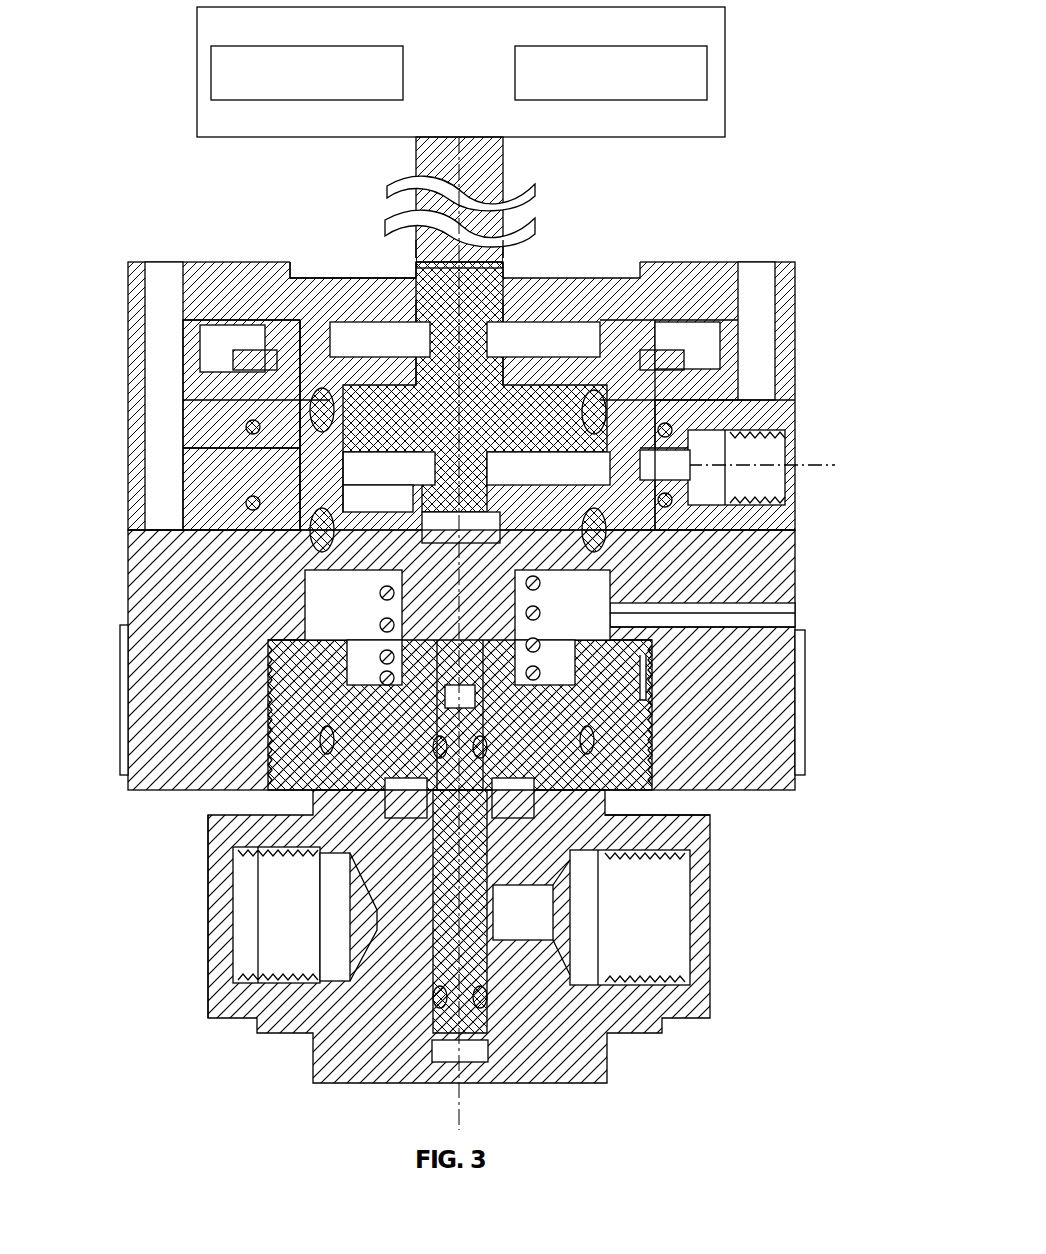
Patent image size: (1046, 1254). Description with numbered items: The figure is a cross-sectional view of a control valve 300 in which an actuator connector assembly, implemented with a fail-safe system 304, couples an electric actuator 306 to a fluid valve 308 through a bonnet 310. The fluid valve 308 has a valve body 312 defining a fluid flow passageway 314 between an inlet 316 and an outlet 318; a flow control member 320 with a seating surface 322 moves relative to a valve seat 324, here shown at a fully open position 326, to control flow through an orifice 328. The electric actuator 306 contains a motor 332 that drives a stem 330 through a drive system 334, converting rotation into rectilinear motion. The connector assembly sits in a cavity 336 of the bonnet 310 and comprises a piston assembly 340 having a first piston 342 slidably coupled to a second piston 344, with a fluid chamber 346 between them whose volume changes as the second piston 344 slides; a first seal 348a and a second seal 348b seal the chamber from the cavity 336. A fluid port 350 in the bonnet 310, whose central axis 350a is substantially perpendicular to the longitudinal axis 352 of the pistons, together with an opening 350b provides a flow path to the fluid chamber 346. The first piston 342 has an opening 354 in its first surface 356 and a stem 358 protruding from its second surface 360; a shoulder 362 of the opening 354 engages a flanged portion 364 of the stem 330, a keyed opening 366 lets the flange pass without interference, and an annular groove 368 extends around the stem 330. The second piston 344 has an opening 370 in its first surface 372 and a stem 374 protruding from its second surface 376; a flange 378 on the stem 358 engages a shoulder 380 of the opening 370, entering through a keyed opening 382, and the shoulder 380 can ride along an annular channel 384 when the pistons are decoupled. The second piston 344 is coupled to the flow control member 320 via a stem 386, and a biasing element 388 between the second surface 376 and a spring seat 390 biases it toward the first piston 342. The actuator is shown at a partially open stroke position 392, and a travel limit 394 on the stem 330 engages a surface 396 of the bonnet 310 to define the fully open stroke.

The control valve 300 is at (814, 28).
The fail-safe system 304 is at (300, 455).
The electric actuator 306 is at (197, 42).
The fluid valve 308 is at (185, 965).
The bonnet 310 is at (128, 540).
The valve body 312 is at (318, 1060).
The fluid flow passageway 314 is at (548, 923).
The inlet 316 is at (710, 920).
The outlet 318 is at (208, 925).
The flow control member 320 is at (560, 890).
The seating surface 322 is at (390, 855).
The valve seat 324 is at (390, 830).
The fully open position 326 is at (385, 900).
The orifice 328 is at (500, 830).
The stem 330 is at (513, 268).
The motor 332 is at (211, 70).
The drive system 334 is at (707, 75).
The cavity 336 is at (360, 621).
The piston assembly 340 is at (345, 335).
The first piston 342 is at (655, 395).
The second piston 344 is at (615, 660).
The fluid chamber 346 is at (604, 480).
The first seal 348a is at (335, 405).
The second seal 348b is at (330, 585).
The fluid port 350 is at (795, 495).
The central axis 350a is at (770, 462).
The opening 350b is at (640, 445).
The longitudinal axis 352 is at (440, 200).
The opening 354 is at (640, 370).
The first surface 356 is at (582, 335).
The stem 358 is at (435, 485).
The second surface 360 is at (370, 385).
The shoulder 362 is at (495, 372).
The flanged portion 364 is at (420, 375).
The keyed opening 366 is at (345, 345).
The annular groove 368 is at (440, 330).
The opening 370 is at (620, 640).
The first surface 372 is at (330, 465).
The stem 374 is at (300, 690).
The second surface 376 is at (560, 590).
The flange 378 is at (430, 545).
The shoulder 380 is at (610, 605).
The keyed opening 382 is at (320, 545).
The annular channel 384 is at (605, 540).
The stem 386 is at (300, 755).
The biasing element 388 is at (320, 620).
The spring seat 390 is at (640, 735).
The partially open stroke position 392 is at (600, 335).
The travel limit 394 is at (527, 268).
The surface 396 is at (357, 277).